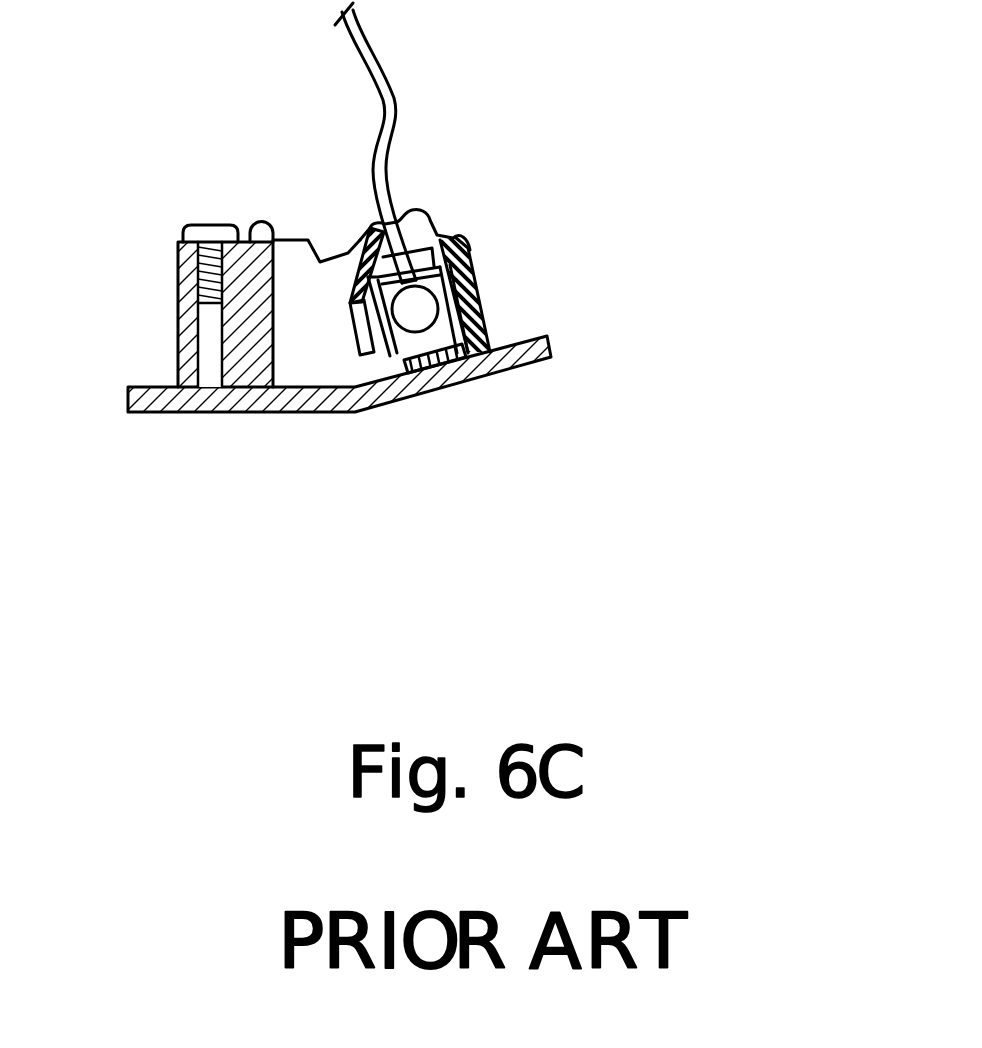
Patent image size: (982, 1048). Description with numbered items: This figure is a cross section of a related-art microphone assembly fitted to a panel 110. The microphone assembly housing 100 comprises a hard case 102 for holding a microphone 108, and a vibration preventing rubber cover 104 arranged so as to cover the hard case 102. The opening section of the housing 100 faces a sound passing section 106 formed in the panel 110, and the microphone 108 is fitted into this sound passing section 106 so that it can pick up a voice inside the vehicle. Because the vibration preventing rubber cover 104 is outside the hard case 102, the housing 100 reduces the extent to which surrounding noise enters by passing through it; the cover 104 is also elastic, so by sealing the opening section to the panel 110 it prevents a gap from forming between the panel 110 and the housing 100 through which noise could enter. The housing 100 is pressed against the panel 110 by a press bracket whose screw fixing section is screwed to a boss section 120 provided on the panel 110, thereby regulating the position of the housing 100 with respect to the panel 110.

The microphone assembly housing 100 is at (803, 147).
The hard case 102 is at (468, 300).
The vibration preventing rubber cover 104 is at (452, 238).
The sound passing section 106 is at (420, 393).
The microphone 108 is at (407, 309).
The panel 110 is at (323, 402).
The boss section 120 is at (185, 313).